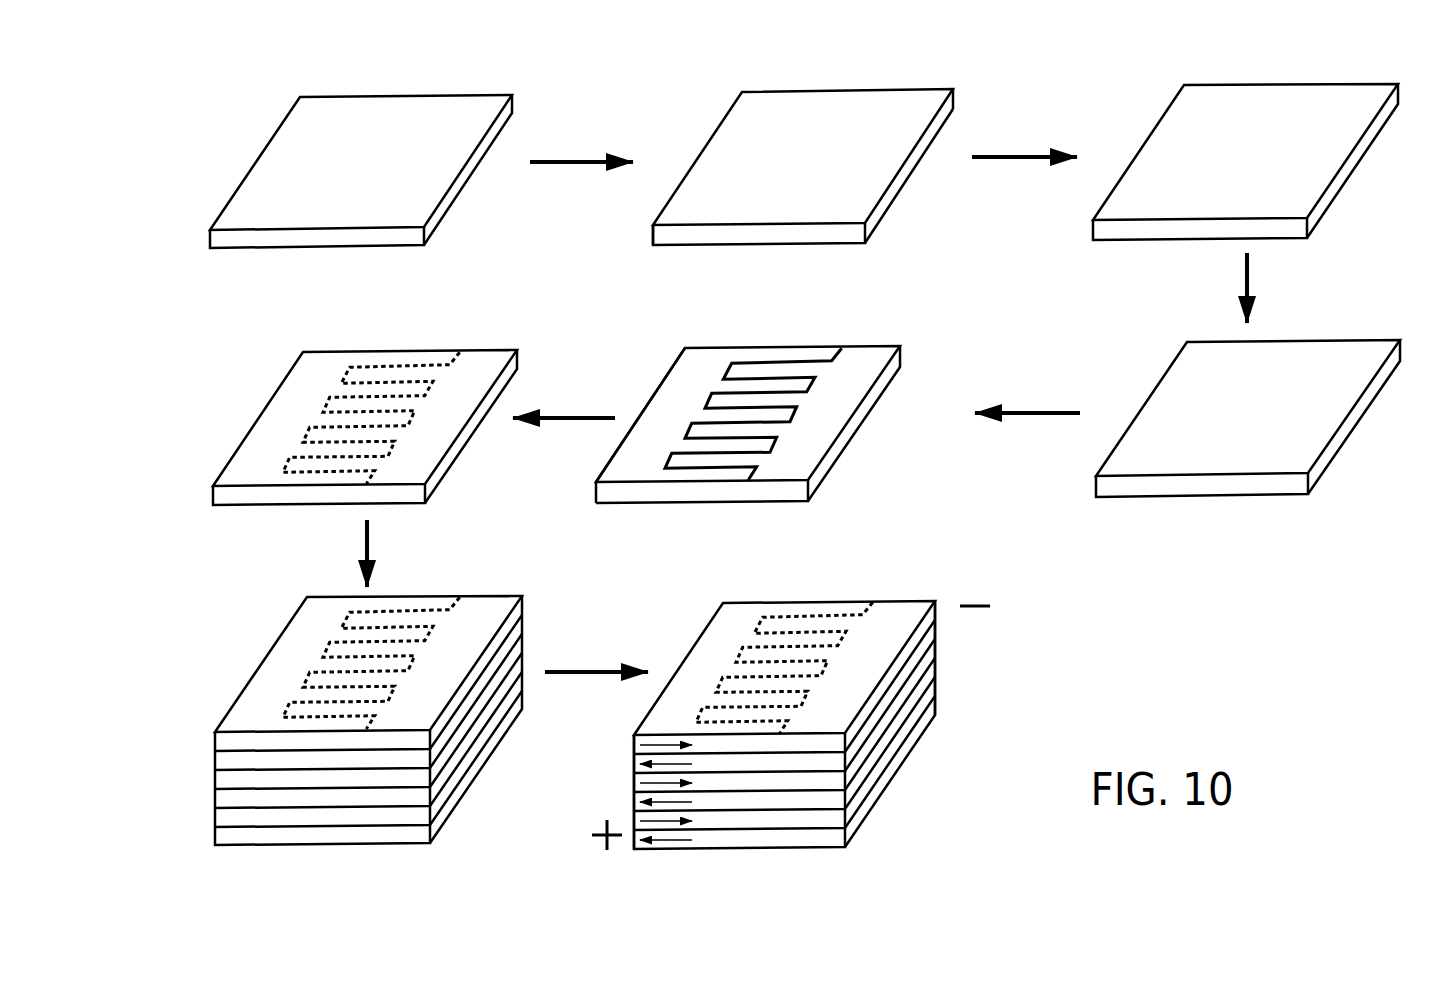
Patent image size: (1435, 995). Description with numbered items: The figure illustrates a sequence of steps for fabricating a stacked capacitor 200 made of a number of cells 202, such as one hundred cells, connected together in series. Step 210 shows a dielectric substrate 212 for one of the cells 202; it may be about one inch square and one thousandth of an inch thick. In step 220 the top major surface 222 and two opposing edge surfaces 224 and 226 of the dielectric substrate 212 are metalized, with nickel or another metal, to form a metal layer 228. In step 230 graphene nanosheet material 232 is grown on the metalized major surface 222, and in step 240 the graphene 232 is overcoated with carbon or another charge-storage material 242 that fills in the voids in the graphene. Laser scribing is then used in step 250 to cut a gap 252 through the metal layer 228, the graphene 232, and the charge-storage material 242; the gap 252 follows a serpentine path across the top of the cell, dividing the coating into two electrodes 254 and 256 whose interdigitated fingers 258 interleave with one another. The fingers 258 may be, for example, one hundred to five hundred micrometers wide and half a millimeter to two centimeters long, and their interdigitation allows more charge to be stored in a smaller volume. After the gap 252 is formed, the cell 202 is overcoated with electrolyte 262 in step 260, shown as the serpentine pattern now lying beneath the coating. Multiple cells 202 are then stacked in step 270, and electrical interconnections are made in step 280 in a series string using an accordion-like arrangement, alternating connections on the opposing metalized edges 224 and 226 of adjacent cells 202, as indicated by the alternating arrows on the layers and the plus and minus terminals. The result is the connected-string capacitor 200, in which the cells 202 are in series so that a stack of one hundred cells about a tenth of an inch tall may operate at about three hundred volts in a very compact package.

The stacked capacitor 200 is at (900, 798).
The cell 202 is at (203, 495).
The step 210 is at (237, 279).
The dielectric substrate 212 is at (245, 212).
The step 220 is at (827, 208).
The top surface 222 is at (813, 207).
The edge surface 224 is at (647, 233).
The edge surface 226 is at (878, 213).
The metal layer 228 is at (955, 110).
The step 230 is at (1237, 201).
The graphene nanosheet material 232 is at (1298, 183).
The step 240 is at (1242, 462).
The charge-storage material 242 is at (1298, 445).
The step 250 is at (718, 464).
The gap 252 is at (713, 468).
The electrode 254 is at (605, 463).
The electrode 256 is at (800, 457).
The interdigitated fingers 258 is at (845, 410).
The step 260 is at (360, 476).
The electrolyte 262 is at (312, 479).
The step 270 is at (263, 867).
The step 280 is at (781, 759).